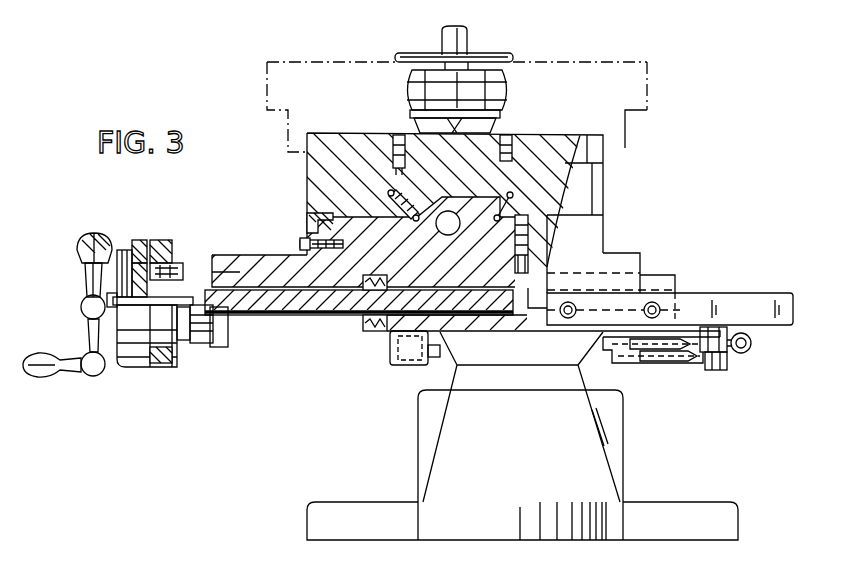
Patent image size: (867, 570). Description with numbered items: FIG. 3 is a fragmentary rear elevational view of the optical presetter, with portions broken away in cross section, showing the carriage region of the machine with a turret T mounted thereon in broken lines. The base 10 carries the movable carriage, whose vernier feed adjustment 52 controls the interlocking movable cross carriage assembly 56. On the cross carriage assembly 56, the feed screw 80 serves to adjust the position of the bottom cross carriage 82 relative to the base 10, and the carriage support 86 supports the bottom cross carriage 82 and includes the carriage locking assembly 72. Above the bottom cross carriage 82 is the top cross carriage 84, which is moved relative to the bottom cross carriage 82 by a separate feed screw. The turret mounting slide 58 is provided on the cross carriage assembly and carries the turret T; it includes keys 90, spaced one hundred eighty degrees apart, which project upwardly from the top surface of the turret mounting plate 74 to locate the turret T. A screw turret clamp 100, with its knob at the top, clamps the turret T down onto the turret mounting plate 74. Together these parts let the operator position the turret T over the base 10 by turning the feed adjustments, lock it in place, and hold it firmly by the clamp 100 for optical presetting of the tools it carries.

The base 10 is at (524, 456).
The vernier feed adjustment 52 is at (155, 367).
The cross carriage assembly 56 is at (652, 260).
The turret mounting slide 58 is at (560, 125).
The carriage locking assembly 72 is at (658, 372).
The turret mounting plate 74 is at (605, 143).
The feed screw 80 is at (278, 318).
The bottom cross carriage 82 is at (607, 238).
The top cross carriage 84 is at (605, 180).
The carriage support 86 is at (675, 285).
The keys 90 is at (455, 133).
The screw turret clamp 100 is at (485, 40).
The turret T is at (652, 60).